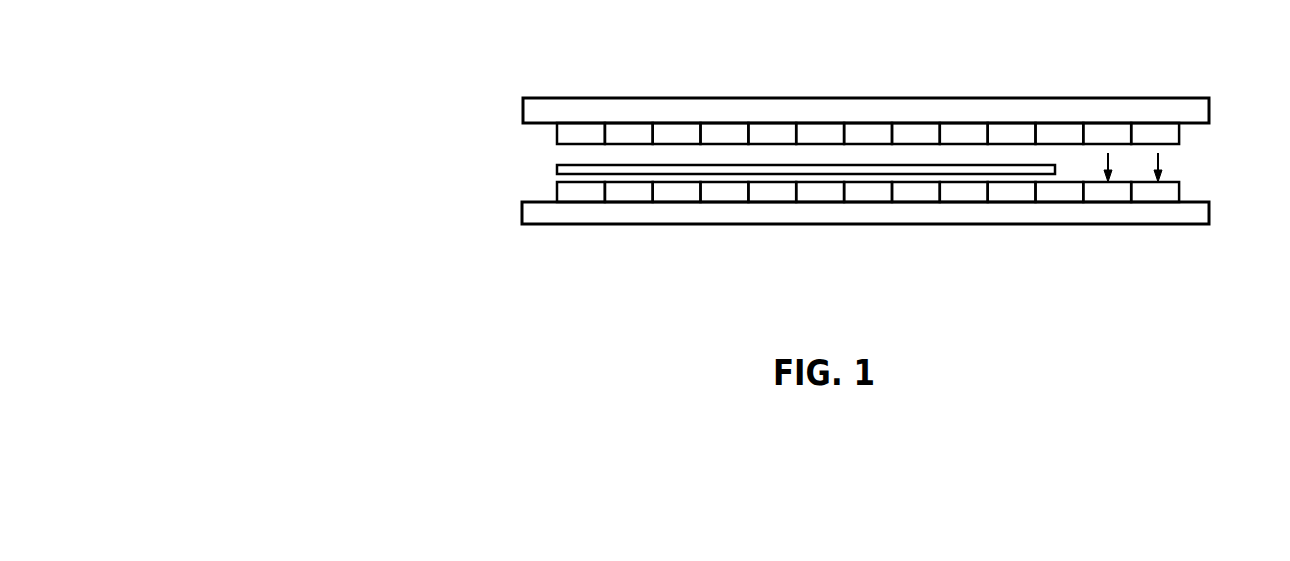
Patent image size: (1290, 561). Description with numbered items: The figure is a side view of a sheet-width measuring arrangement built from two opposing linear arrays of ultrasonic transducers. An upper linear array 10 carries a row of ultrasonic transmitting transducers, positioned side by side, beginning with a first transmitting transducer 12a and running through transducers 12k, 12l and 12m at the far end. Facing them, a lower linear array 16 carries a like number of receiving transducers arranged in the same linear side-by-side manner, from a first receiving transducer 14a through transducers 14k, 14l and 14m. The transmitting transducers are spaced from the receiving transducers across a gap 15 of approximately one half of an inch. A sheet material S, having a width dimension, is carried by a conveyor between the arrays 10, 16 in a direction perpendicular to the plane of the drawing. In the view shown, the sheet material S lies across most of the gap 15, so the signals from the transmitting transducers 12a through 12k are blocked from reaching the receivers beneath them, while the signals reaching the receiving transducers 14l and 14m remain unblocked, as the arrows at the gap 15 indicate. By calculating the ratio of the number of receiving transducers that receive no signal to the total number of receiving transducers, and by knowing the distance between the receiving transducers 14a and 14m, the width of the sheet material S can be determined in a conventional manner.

The linear array of ultrasonic transmitting transducers 10 is at (523, 110).
The ultrasonic transmitting transducer 12a is at (565, 129).
The ultrasonic transmitting transducer 12k is at (1052, 130).
The ultrasonic transmitting transducer 12l is at (1103, 133).
The ultrasonic transmitting transducer 12m is at (1153, 132).
The sheet material S is at (557, 168).
The gap 15 is at (1170, 167).
The receiving transducer 14a is at (586, 193).
The receiving transducer 14k is at (1053, 195).
The receiving transducer 14l is at (1117, 193).
The receiving transducer 14m is at (1152, 195).
The linear array of receiving transducers 16 is at (522, 209).